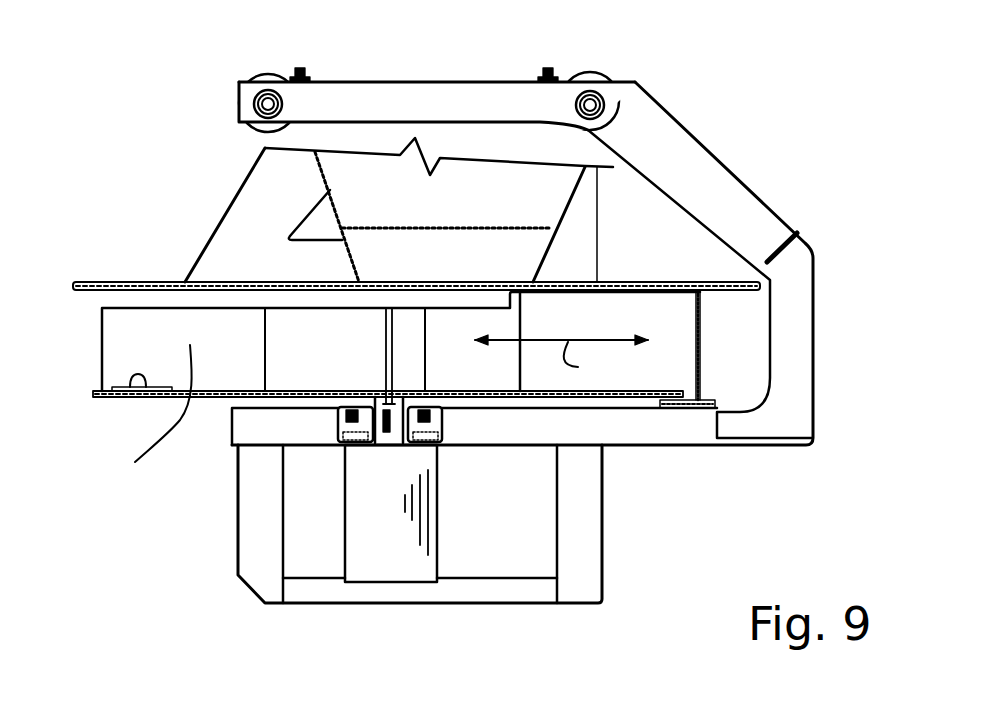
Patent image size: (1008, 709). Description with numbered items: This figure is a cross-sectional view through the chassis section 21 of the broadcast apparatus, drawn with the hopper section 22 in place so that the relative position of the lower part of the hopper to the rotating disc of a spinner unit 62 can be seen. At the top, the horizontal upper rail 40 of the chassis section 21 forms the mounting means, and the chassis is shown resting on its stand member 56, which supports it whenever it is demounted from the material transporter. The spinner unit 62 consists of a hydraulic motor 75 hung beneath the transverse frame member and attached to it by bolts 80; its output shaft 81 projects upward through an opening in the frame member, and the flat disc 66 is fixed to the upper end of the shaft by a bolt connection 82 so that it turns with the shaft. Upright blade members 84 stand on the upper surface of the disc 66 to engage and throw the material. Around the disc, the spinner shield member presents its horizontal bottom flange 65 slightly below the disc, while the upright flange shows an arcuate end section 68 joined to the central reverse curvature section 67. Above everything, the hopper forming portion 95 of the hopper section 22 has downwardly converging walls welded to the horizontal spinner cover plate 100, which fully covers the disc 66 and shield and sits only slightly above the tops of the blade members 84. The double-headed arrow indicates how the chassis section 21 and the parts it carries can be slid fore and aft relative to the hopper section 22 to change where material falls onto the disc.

The chassis section 21 is at (717, 126).
The hopper section 22 is at (200, 166).
The upper rail 40 is at (420, 76).
The stand member 56 is at (527, 568).
The spinner unit 62 is at (122, 408).
The horizontal bottom flange 65 is at (654, 412).
The flat disc 66 is at (210, 397).
The reverse curvature section 67 is at (652, 325).
The arcuate end section 68 is at (700, 363).
The hydraulic motor 75 is at (438, 512).
The bolt 80 is at (347, 415).
The output shaft 81 is at (395, 425).
The bolt connection 82 is at (385, 391).
The blade member 84 is at (152, 418).
The hopper forming portion 95 is at (545, 258).
The spinner cover plate 100 is at (150, 282).